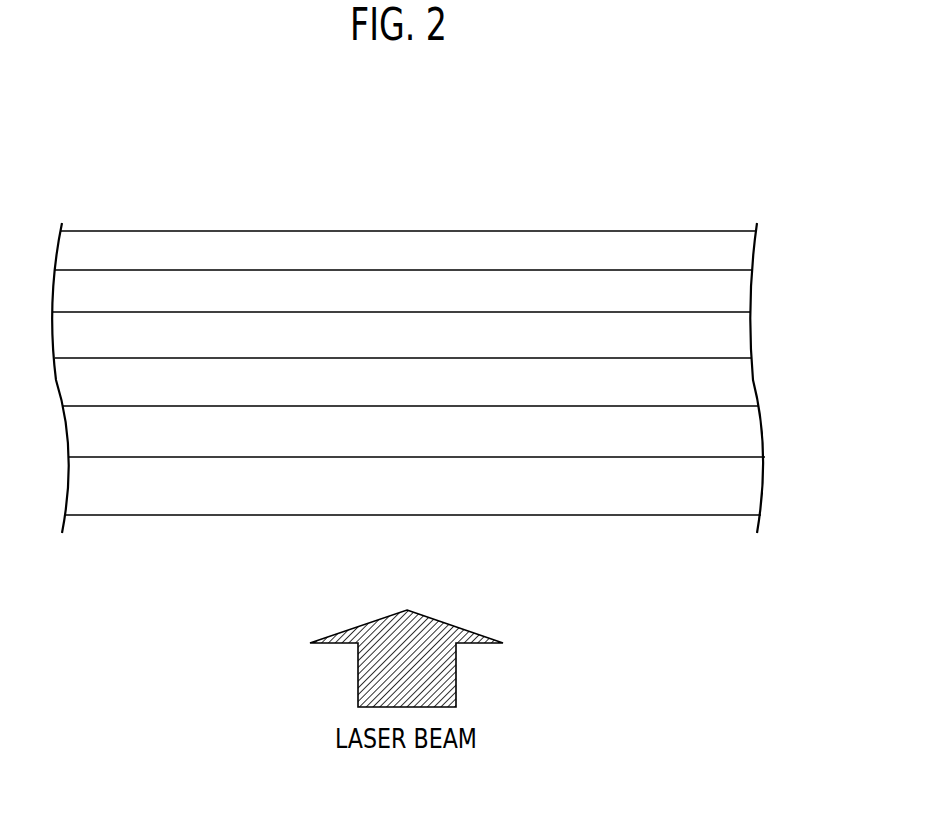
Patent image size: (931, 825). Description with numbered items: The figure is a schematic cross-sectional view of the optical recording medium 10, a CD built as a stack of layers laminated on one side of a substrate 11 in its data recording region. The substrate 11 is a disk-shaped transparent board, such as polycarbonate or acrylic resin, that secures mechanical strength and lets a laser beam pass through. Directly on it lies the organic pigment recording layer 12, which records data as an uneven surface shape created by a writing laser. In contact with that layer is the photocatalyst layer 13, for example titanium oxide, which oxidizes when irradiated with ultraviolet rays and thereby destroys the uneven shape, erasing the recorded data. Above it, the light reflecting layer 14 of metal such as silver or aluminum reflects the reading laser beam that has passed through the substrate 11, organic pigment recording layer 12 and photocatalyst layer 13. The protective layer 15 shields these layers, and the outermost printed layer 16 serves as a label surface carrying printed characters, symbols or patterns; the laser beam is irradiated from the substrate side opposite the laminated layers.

The optical recording medium 10 is at (438, 323).
The substrate 11 is at (757, 487).
The organic pigment recording layer 12 is at (757, 432).
The photocatalyst layer 13 is at (757, 387).
The light reflecting layer 14 is at (747, 342).
The protective layer 15 is at (747, 292).
The printed layer 16 is at (750, 257).